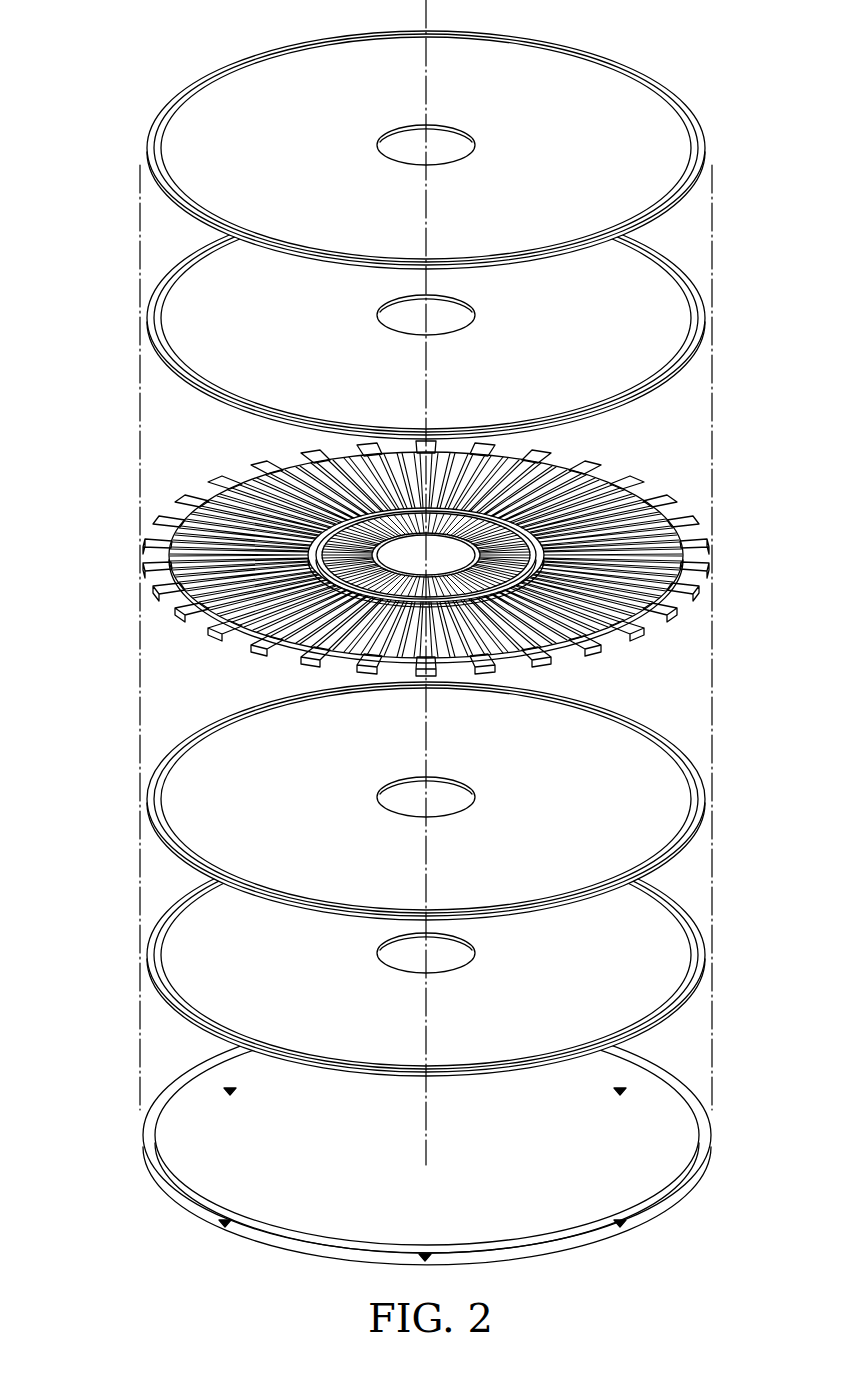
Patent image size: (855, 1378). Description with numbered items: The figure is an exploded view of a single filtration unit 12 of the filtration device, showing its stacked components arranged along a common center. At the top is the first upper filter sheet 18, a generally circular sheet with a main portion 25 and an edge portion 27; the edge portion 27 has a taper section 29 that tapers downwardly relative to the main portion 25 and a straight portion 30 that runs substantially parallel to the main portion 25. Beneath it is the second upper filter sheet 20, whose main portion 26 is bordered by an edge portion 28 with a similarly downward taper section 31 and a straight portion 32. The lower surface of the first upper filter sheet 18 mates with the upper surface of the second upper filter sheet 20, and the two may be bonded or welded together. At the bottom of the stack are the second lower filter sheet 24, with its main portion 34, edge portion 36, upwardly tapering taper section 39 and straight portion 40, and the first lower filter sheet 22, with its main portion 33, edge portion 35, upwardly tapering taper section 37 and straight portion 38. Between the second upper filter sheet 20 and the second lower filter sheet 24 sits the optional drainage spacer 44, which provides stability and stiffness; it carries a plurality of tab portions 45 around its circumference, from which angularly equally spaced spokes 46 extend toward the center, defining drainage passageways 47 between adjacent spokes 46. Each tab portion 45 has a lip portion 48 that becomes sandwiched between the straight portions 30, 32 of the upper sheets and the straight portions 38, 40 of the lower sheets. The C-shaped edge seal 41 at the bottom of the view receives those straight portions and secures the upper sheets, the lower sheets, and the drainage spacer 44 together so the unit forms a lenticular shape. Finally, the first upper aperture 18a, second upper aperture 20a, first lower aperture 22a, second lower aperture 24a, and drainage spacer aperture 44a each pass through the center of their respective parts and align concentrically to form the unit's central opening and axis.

The filtration unit 12 is at (70, 1245).
The first upper filter sheet 18 is at (195, 147).
The first upper aperture 18a is at (438, 142).
The second upper filter sheet 20 is at (195, 322).
The second upper aperture 20a is at (438, 317).
The first lower filter sheet 22 is at (195, 957).
The first lower aperture 22a is at (438, 957).
The second lower filter sheet 24 is at (195, 800).
The second lower aperture 24a is at (438, 800).
The main portion 25 is at (330, 63).
The main portion 26 is at (232, 266).
The edge portion 27 is at (250, 62).
The edge portion 28 is at (187, 273).
The taper section 29 is at (226, 72).
The straight portion 30 is at (160, 114).
The taper section 31 is at (432, 12).
The straight portion 32 is at (167, 358).
The main portion 33 is at (648, 982).
The main portion 34 is at (640, 797).
The edge portion 35 is at (695, 955).
The edge portion 36 is at (590, 709).
The taper section 37 is at (198, 1008).
The straight portion 38 is at (180, 1003).
The taper section 39 is at (293, 700).
The straight portion 40 is at (222, 722).
The edge seal 41 is at (150, 1124).
The drainage spacer 44 is at (170, 556).
The drainage spacer aperture 44a is at (322, 462).
The tab portions 45 is at (220, 488).
The spokes 46 is at (606, 478).
The drainage passageways 47 is at (514, 464).
The lip portion 48 is at (165, 538).